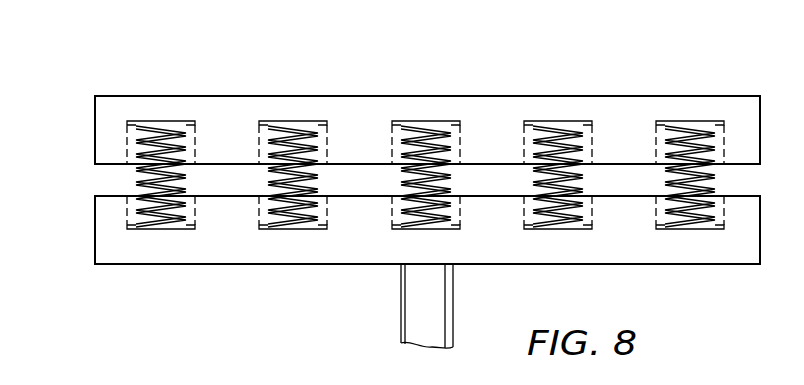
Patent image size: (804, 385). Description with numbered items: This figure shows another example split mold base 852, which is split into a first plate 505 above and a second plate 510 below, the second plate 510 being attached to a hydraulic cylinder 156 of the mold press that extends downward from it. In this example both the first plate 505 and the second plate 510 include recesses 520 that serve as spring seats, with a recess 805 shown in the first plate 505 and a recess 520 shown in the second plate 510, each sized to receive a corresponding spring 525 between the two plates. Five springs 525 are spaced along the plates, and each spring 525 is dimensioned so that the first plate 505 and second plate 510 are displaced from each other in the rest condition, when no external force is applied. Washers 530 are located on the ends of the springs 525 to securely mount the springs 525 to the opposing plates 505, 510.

The split mold base 852 is at (164, 59).
The first plate 505 is at (95, 116).
The second plate 510 is at (95, 232).
The top plate recess 805 is at (133, 140).
The recess 520 is at (133, 200).
The washer 530 is at (292, 120).
The spring 525 is at (161, 230).
The hydraulic cylinder 156 is at (401, 312).